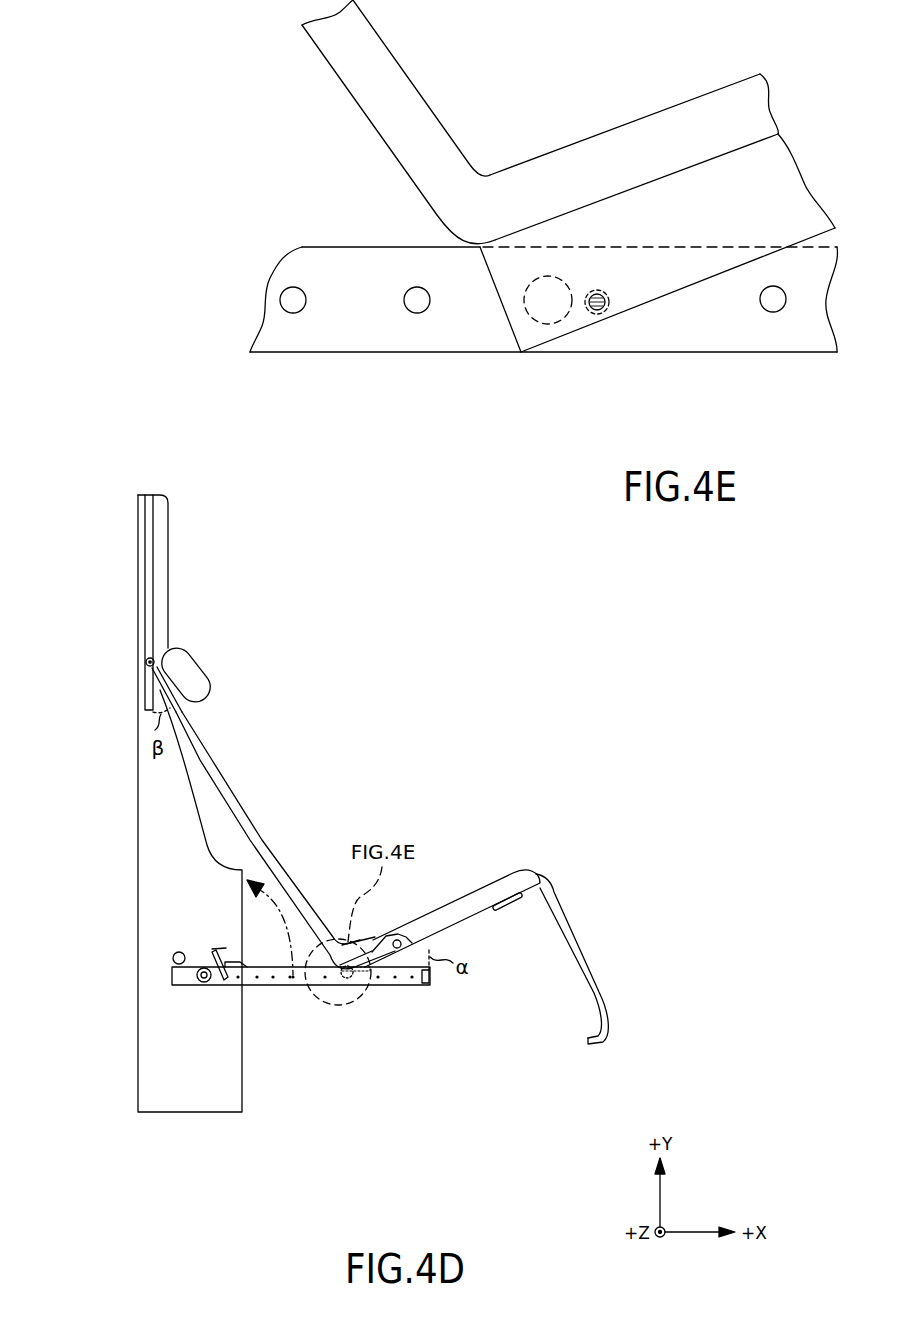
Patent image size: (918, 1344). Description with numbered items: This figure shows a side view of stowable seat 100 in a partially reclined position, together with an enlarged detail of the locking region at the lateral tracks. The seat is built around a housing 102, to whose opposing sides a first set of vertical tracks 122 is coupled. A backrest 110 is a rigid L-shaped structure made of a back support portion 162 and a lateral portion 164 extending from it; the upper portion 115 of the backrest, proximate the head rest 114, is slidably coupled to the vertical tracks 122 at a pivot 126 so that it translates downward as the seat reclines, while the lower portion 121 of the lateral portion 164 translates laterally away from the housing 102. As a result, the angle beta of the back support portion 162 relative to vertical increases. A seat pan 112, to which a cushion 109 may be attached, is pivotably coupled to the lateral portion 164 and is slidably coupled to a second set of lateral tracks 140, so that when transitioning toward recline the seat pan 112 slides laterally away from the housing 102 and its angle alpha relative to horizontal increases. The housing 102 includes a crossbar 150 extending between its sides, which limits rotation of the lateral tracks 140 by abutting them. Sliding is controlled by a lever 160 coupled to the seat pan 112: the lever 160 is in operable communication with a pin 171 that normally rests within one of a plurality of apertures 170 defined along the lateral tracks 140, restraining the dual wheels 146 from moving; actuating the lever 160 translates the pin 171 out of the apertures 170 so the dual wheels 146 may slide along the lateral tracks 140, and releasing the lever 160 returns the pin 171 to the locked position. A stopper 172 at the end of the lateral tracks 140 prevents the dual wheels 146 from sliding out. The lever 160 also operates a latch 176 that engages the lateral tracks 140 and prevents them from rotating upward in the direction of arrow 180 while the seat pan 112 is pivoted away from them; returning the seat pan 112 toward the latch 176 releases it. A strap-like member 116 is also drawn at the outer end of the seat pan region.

In FIG. 4D, the stowable seat 100 is at (220, 517).
In FIG. 4D, the housing 102 is at (190, 803).
In FIG. 4D, the cushion 109 is at (475, 893).
In FIG. 4D, the backrest 110 is at (246, 772).
In FIG. 4D, the seat pan 112 is at (483, 920).
In FIG. 4D, the head rest 114 is at (192, 660).
In FIG. 4D, the upper portion 115 is at (155, 674).
In FIG. 4D, the strap 116 is at (587, 982).
In FIG. 4E, the lower portion 121 is at (678, 243).
In FIG. 4D, the first set of tracks 122 is at (150, 505).
In FIG. 4D, the pivot 126 is at (147, 659).
In FIG. 4E, the second set of tracks 140 is at (503, 352).
In FIG. 4D, the second set of tracks 140 is at (242, 985).
In FIG. 4E, the dual wheels 146 is at (555, 305).
In FIG. 4D, the dual wheels 146 is at (343, 985).
In FIG. 4D, the crossbar 150 is at (173, 953).
In FIG. 4D, the lever 160 is at (525, 890).
In FIG. 4E, the back support portion 162 is at (400, 70).
In FIG. 4D, the back support portion 162 is at (243, 815).
In FIG. 4E, the lateral portion 164 is at (592, 140).
In FIG. 4D, the lateral portion 164 is at (380, 945).
In FIG. 4E, the apertures 170 is at (297, 311).
In FIG. 4D, the apertures 170 is at (257, 976).
In FIG. 4E, the pin 171 is at (605, 308).
In FIG. 4D, the stopper 172 is at (427, 985).
In FIG. 4D, the latch 176 is at (215, 950).
In FIG. 4D, the arrow 180 is at (287, 913).